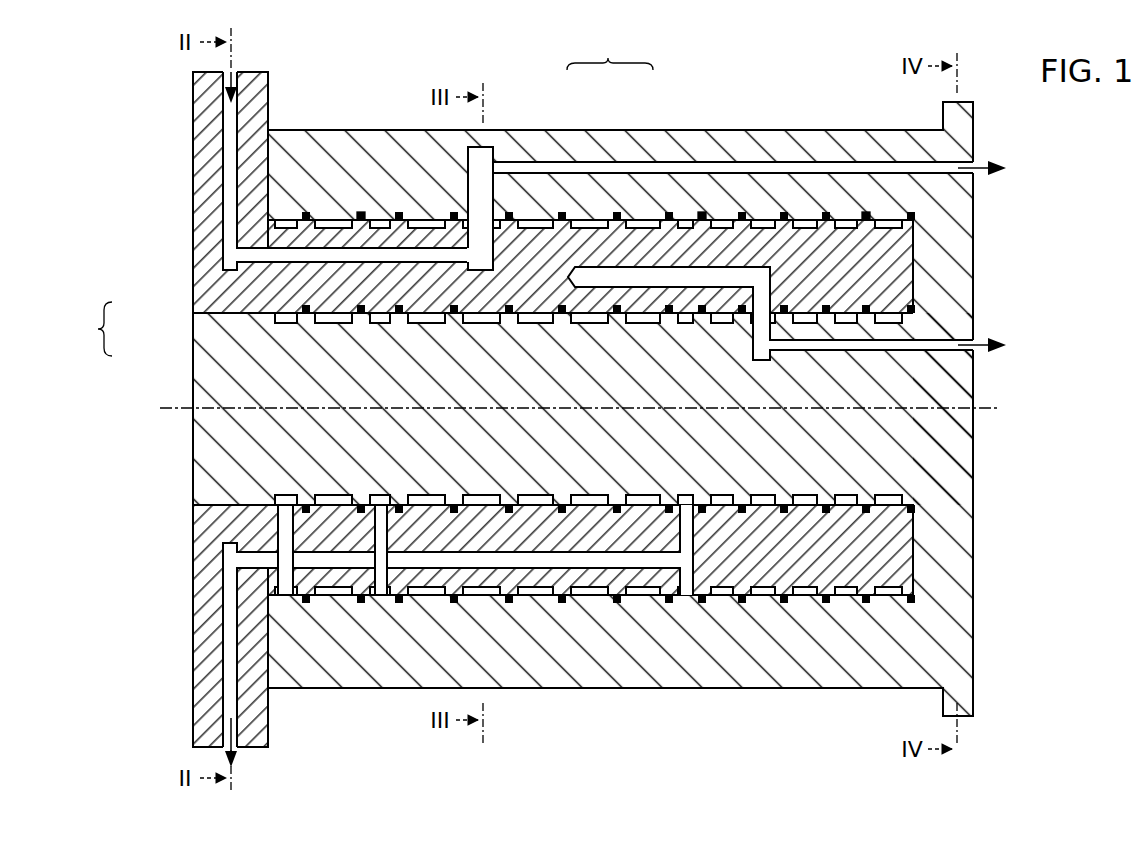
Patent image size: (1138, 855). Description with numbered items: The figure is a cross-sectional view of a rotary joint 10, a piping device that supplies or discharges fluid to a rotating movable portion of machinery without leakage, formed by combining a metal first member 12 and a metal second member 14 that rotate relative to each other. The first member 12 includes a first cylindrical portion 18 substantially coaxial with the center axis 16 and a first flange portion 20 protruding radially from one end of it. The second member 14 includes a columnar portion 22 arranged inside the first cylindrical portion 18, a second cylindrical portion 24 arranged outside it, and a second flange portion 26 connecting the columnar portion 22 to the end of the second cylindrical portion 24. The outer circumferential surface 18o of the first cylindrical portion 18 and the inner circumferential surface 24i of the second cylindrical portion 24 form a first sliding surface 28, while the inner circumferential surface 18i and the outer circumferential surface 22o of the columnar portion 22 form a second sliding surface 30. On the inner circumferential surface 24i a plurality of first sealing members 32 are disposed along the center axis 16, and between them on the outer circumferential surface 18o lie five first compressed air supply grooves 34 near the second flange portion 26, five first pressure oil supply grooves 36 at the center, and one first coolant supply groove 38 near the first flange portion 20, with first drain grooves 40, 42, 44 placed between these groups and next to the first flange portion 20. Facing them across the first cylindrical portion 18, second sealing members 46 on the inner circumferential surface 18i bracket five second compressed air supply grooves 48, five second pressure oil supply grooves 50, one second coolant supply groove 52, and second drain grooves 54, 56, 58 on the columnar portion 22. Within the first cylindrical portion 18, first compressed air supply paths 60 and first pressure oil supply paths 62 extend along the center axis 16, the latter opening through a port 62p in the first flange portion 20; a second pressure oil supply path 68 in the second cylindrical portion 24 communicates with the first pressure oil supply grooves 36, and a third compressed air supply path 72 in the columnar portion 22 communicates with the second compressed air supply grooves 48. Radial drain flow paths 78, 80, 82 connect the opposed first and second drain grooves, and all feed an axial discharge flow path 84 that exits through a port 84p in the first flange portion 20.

The rotary joint 10 is at (982, 55).
The first member 12 is at (190, 168).
The second member 14 is at (977, 221).
The center axis 16 is at (994, 404).
The first cylindrical portion 18 is at (255, 284).
The first flange portion 20 is at (208, 94).
The columnar portion 22 is at (955, 455).
The second cylindrical portion 24 is at (923, 138).
The second flange portion 26 is at (966, 118).
The first sliding surface 28 is at (610, 49).
The second sliding surface 30 is at (93, 329).
The inner circumferential surface of the second cylindrical portion 24i is at (585, 230).
The outer circumferential surface of the first cylindrical portion 18o is at (627, 230).
The outer circumferential surface of the columnar portion 22o is at (290, 322).
The inner circumferential surface of the first cylindrical portion 18i is at (300, 312).
The first sealing member 32 is at (361, 212).
The first compressed air supply groove 34 is at (847, 220).
The first pressure oil supply groove 36 is at (510, 220).
The first coolant supply groove 38 is at (322, 220).
The first drain groove 40 is at (683, 220).
The first drain groove 42 is at (378, 220).
The first drain groove 44 is at (283, 220).
The second sealing member 46 is at (864, 212).
The second compressed air supply groove 48 is at (736, 316).
The second pressure oil supply groove 50 is at (577, 220).
The second coolant supply groove 52 is at (335, 318).
The second drain groove 54 is at (693, 222).
The second drain groove 56 is at (383, 318).
The second drain groove 58 is at (292, 318).
The first compressed air supply path 60 is at (650, 282).
The first pressure oil supply path 62 is at (418, 255).
The port 62p is at (234, 70).
The second pressure oil supply path 68 is at (532, 220).
The third compressed air supply path 72 is at (960, 345).
The drain flow path 78 is at (686, 545).
The drain flow path 80 is at (380, 530).
The drain flow path 82 is at (287, 523).
The discharge flow path 84 is at (597, 562).
The port 84p is at (238, 764).